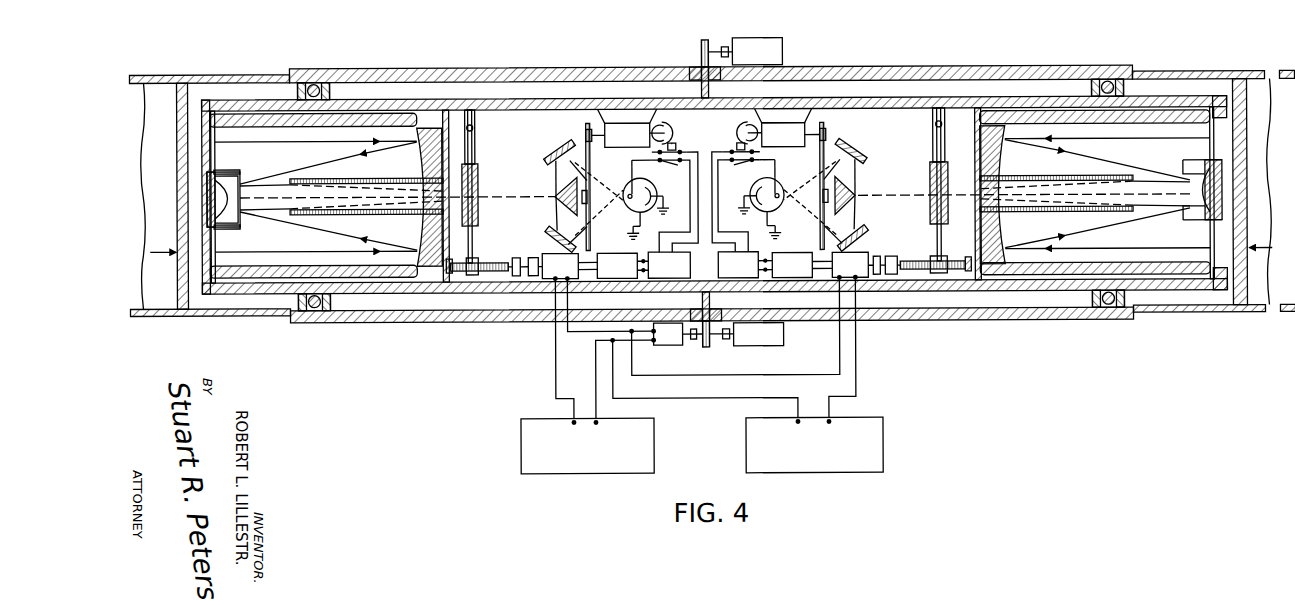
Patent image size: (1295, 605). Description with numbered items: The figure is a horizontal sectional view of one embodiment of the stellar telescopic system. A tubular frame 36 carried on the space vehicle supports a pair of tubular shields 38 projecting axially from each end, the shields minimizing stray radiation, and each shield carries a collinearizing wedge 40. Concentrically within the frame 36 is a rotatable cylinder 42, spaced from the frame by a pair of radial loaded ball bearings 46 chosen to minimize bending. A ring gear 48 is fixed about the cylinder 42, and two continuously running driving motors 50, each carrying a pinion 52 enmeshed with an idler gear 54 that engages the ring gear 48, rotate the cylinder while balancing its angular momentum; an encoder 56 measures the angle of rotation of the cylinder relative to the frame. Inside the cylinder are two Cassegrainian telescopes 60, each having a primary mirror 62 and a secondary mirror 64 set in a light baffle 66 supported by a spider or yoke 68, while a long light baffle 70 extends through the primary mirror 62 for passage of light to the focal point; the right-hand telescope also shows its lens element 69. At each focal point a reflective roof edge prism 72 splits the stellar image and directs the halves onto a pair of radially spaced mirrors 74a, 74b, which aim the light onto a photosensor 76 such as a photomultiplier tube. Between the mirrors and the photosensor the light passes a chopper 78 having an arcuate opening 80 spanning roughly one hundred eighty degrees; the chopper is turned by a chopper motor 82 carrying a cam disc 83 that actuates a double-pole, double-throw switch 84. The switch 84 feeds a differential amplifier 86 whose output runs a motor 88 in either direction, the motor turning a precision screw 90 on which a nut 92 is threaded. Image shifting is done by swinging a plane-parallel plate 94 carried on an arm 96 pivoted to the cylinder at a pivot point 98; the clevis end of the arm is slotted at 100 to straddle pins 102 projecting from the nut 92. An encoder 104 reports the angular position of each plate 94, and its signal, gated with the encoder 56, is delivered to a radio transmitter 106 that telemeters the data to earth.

The tubular frame 36 is at (468, 67).
The tubular shield 38 is at (170, 74).
The collinearizing wedge 40 is at (178, 112).
The cylindrical or sleeve member 42 is at (567, 98).
The radial loaded ball bearing 46 is at (330, 90).
The ring gear 48 is at (712, 88).
The driving motor 50 is at (772, 38).
The pinion 52 is at (702, 47).
The idler gear 54 is at (692, 68).
The encoder 56 is at (655, 346).
The Cassegrainian telescope 60 is at (298, 128).
The primary mirror 62 is at (418, 158).
The secondary mirror 64 is at (230, 198).
The light baffle 66 is at (230, 226).
The spider or yoke 68 is at (216, 156).
The lens 69 is at (1196, 220).
The light baffle 70 is at (385, 214).
The roof edge prism 72 is at (556, 190).
The mirror 74a is at (556, 156).
The mirror 74b is at (550, 232).
The photosensor or detector 76 is at (658, 198).
The chopper 78 is at (591, 145).
The opening 80 is at (590, 225).
The chopper motor 82 is at (605, 125).
The cam disc 83 is at (726, 135).
The double-pole, double-throw switch 84 is at (670, 162).
The differential amplifier 86 is at (704, 261).
The motor 88 is at (692, 230).
The precision screw 90 is at (490, 262).
The nut 92 is at (449, 258).
The plane-parallel plate 94 is at (478, 185).
The arm 96 is at (473, 155).
The pivot point 98 is at (475, 128).
The slot 100 is at (472, 257).
The pin 102 is at (506, 292).
The encoder 104 is at (543, 254).
The radio transmitter 106 is at (520, 442).